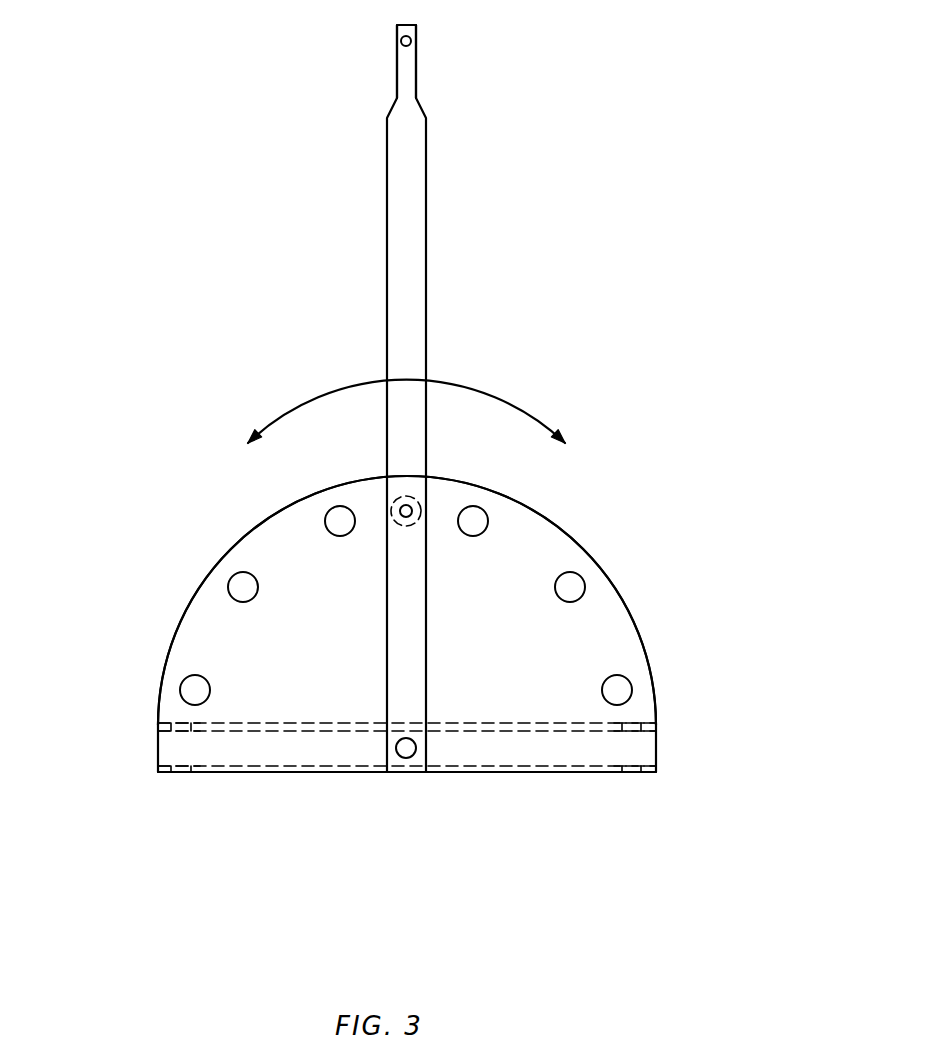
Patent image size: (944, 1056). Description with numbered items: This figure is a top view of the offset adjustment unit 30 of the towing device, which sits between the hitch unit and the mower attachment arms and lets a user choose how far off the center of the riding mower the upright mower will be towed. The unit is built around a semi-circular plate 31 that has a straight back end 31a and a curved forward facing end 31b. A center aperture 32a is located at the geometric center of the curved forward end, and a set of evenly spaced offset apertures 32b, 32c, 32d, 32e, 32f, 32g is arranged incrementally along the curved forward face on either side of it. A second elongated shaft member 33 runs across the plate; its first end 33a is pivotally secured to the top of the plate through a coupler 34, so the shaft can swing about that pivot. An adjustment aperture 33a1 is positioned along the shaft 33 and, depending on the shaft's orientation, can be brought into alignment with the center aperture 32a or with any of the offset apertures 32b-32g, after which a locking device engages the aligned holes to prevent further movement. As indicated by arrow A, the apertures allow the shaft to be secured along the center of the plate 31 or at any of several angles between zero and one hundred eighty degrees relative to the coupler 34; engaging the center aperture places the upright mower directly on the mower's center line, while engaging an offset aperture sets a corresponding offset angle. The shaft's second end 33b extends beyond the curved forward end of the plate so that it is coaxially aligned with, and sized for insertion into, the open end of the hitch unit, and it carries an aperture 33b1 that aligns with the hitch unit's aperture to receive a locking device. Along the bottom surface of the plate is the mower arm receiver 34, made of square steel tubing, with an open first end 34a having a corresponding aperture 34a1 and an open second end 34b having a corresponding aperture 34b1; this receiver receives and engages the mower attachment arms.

The offset adjustment unit 30 is at (172, 147).
The semi-circular plate 31 is at (494, 657).
The back end 31a is at (322, 758).
The curved forward facing end 31b is at (549, 516).
The center aperture 32a is at (410, 494).
The offset aperture 32b is at (330, 514).
The offset aperture 32c is at (233, 578).
The offset aperture 32d is at (184, 688).
The offset aperture 32e is at (473, 512).
The offset aperture 32f is at (580, 583).
The offset aperture 32g is at (628, 688).
The second elongated shaft member 33 is at (430, 280).
The first end 33a is at (440, 754).
The adjustment aperture 33a1 is at (406, 517).
The second end 33b is at (412, 65).
The aperture 33b1 is at (401, 41).
The mower arm receiver 34 is at (268, 778).
The open first end 34a is at (142, 748).
The open second end 34b is at (671, 747).
The aperture 34a1 is at (183, 775).
The aperture 34b1 is at (628, 775).
The arrow A is at (490, 392).